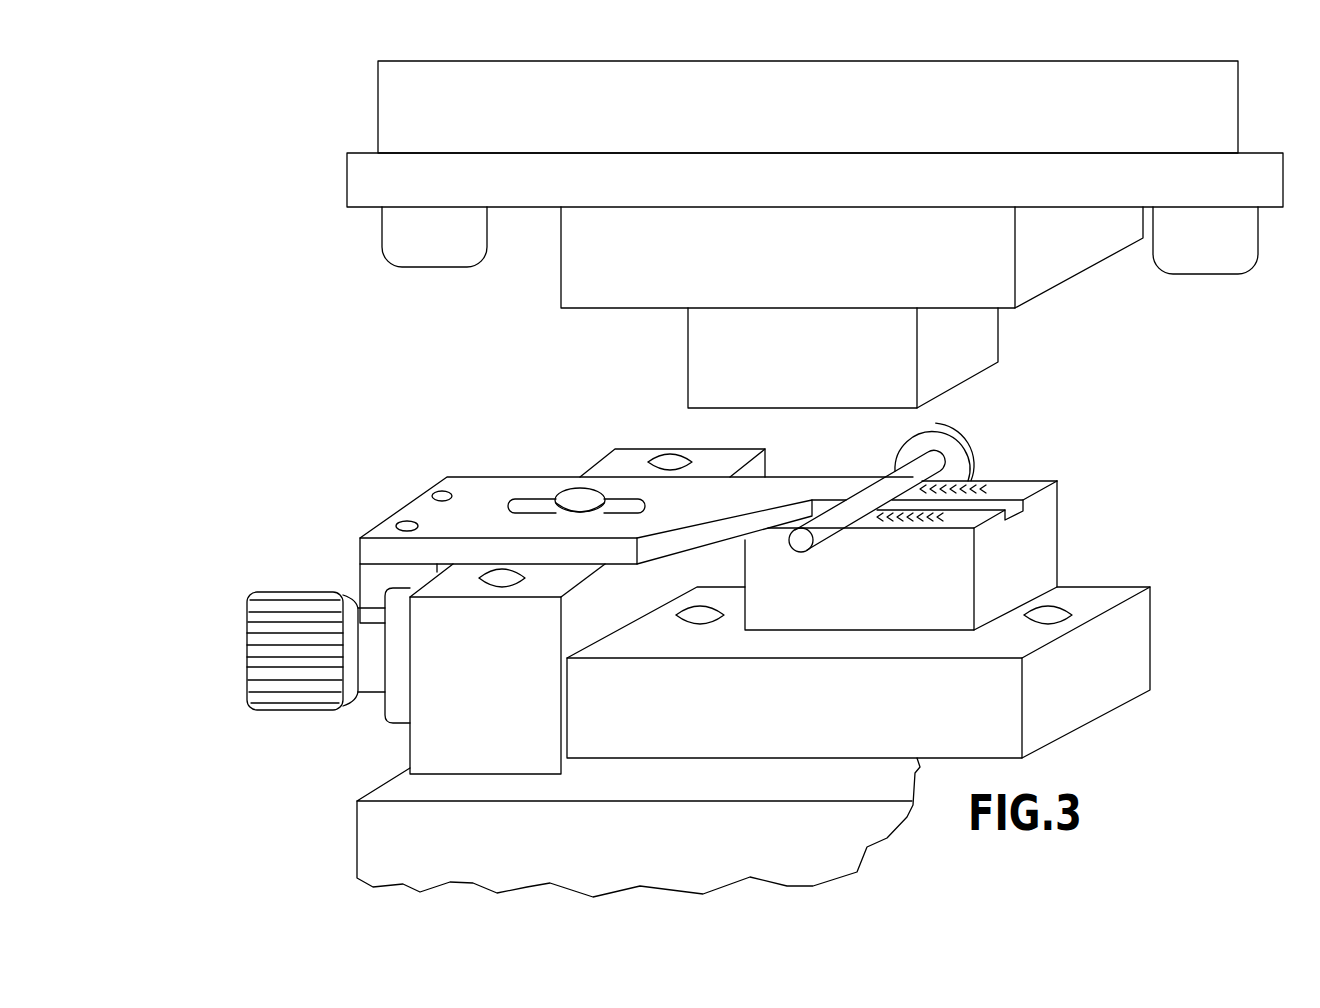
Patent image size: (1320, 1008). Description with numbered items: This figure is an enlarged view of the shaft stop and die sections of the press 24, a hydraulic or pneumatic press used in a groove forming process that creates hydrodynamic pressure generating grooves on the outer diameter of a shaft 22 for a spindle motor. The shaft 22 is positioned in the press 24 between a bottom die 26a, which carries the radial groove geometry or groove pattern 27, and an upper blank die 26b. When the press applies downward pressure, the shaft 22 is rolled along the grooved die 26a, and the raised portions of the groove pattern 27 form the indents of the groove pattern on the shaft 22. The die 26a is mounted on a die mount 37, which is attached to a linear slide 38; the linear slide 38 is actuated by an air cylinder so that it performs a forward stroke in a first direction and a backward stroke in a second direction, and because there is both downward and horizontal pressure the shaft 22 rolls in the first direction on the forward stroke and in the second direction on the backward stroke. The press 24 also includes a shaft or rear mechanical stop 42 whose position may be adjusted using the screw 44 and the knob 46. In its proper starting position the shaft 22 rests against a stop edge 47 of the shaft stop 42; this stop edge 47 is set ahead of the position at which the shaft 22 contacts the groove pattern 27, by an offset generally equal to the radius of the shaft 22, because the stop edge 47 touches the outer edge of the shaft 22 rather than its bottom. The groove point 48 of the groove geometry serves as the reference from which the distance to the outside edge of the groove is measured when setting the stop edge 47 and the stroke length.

The shaft 22 is at (832, 528).
The press 24 is at (185, 215).
The die 26a is at (1057, 507).
The blank die 26b is at (985, 371).
The groove pattern 27 is at (985, 481).
The die mount 37 is at (810, 729).
The linear slide 38 is at (633, 862).
The shaft stop 42 is at (466, 483).
The screw 44 is at (575, 497).
The knob 46 is at (300, 592).
The stop edge 47 is at (862, 484).
The groove point 48 is at (953, 444).